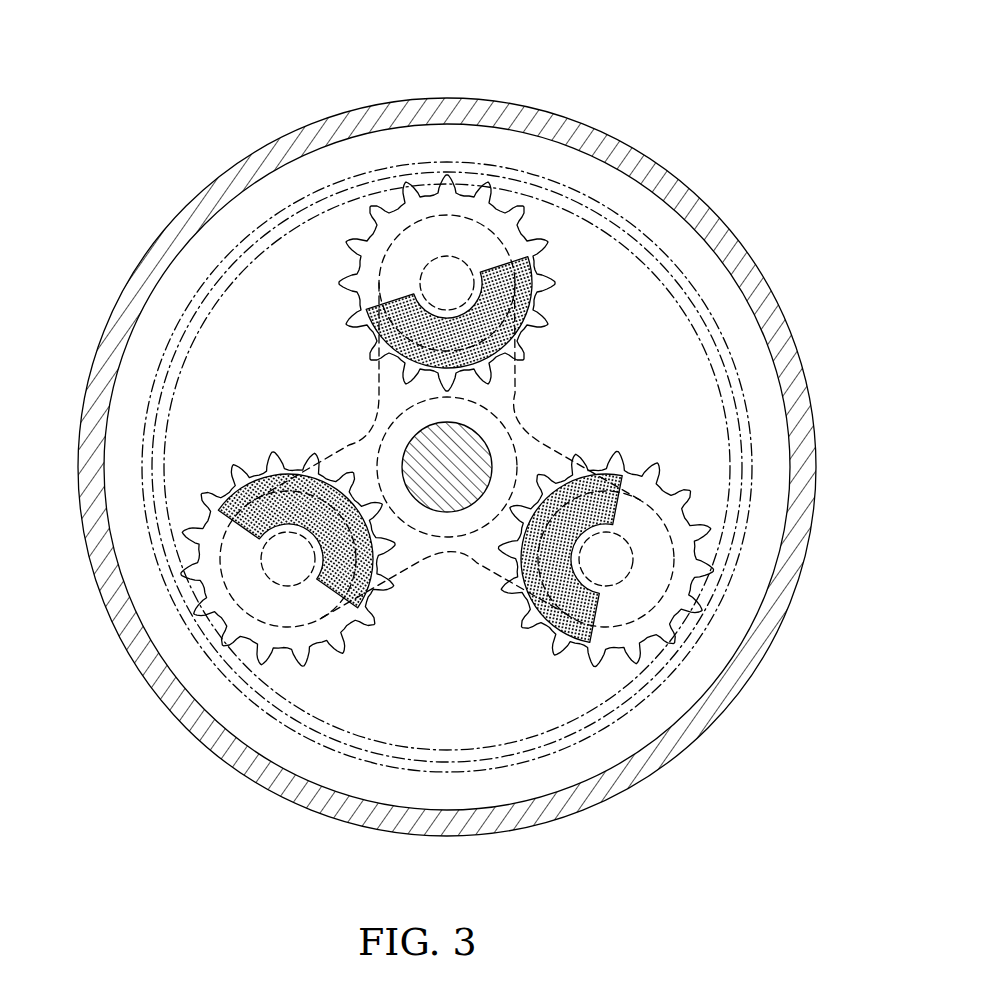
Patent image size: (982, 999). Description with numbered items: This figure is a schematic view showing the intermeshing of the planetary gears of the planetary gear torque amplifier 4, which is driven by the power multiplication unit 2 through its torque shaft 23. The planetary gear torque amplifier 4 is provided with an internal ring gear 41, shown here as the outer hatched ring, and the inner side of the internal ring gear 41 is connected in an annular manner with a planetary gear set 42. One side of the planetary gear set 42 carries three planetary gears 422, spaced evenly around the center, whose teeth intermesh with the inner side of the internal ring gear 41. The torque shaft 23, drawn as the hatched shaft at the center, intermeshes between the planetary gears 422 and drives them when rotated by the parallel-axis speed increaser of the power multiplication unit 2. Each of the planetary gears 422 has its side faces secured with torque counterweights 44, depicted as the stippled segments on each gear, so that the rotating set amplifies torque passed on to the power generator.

The power multiplication unit 2 is at (600, 130).
The torque shaft 23 is at (463, 468).
The planetary gear torque amplifier 4 is at (767, 282).
The internal ring gear 41 is at (618, 243).
The planetary gear set 42 is at (360, 390).
The torque counterweight 44 is at (357, 270).
The planetary gear 422 is at (367, 237).